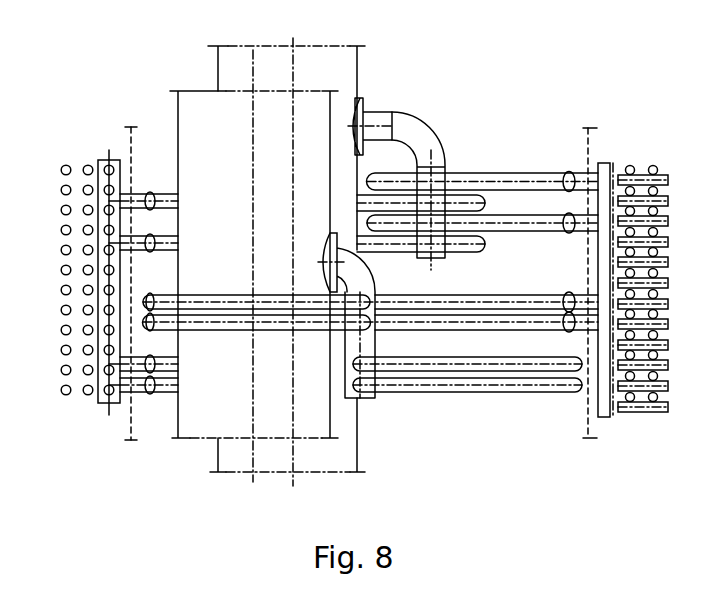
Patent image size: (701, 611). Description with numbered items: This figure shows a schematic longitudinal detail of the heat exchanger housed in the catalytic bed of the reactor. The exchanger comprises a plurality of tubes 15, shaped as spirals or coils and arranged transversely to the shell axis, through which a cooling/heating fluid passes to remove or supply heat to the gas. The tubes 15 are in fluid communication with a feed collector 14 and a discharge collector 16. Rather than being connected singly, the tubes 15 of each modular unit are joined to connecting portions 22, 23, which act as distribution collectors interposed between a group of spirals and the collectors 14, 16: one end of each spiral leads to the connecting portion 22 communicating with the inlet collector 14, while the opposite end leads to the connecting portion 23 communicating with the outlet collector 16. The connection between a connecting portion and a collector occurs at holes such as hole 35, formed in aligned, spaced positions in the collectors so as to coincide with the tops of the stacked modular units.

The feed collector 14 is at (332, 432).
The tubes 15 is at (64, 166).
The discharge collector 16 is at (355, 430).
The connecting portion 22 is at (370, 280).
The connecting portion 23 is at (440, 150).
The hole 35 is at (365, 108).